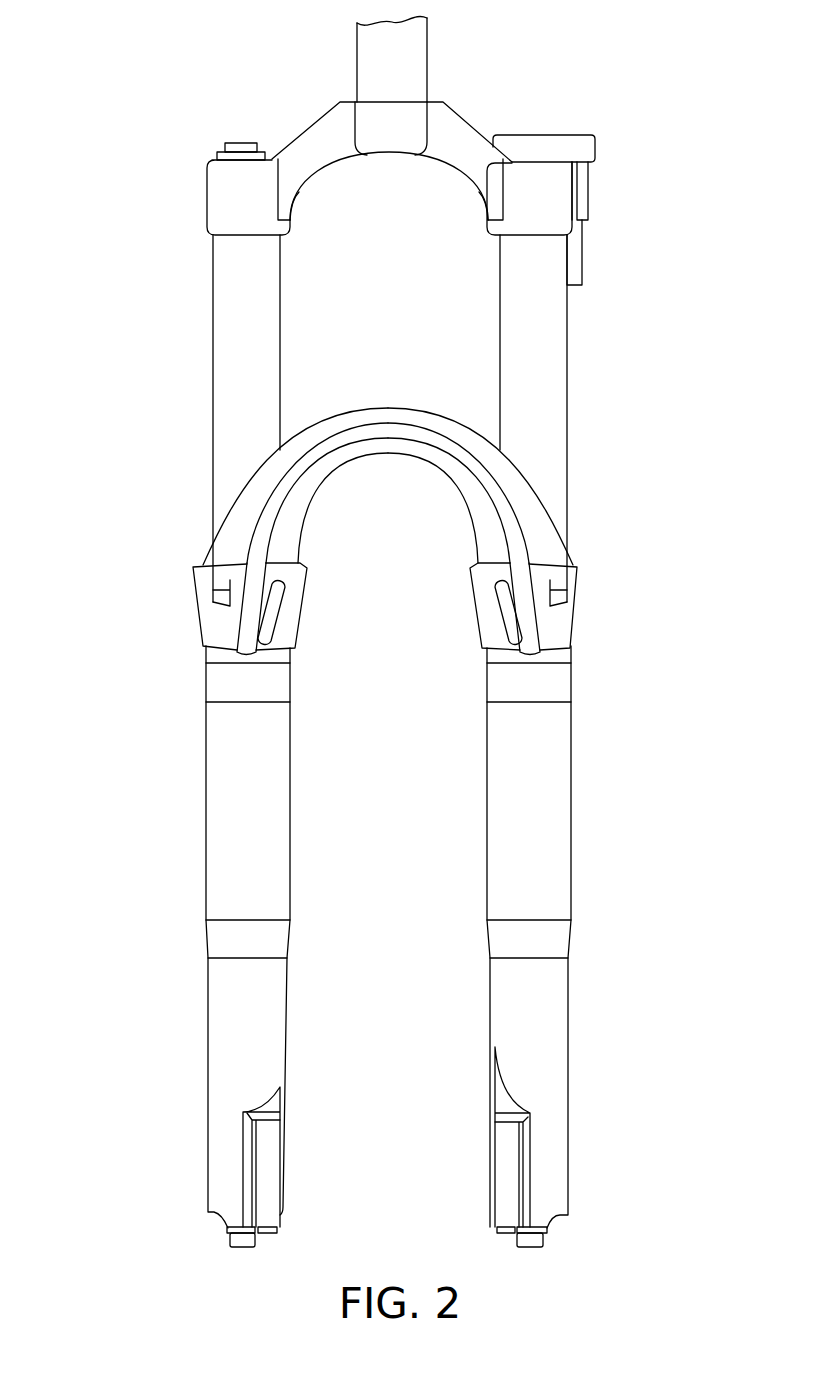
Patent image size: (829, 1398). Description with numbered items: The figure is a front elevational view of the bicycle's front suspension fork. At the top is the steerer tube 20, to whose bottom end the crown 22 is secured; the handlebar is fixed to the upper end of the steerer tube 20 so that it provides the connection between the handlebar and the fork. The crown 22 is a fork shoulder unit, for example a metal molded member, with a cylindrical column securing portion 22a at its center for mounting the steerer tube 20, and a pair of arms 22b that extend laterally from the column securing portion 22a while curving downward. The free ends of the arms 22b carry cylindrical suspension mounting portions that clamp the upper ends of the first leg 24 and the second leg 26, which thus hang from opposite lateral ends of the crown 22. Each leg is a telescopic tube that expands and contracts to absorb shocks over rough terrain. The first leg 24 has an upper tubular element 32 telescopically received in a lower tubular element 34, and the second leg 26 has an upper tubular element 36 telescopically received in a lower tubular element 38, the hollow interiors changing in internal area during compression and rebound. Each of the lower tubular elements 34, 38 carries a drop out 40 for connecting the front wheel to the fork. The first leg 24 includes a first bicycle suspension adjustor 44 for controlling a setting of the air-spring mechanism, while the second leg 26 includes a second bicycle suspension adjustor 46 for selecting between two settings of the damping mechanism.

The steerer tube 20 is at (428, 58).
The crown 22 is at (388, 144).
The column securing portion 22a is at (380, 102).
The arms 22b is at (207, 195).
The first leg 24 is at (546, 544).
The second leg 26 is at (231, 544).
The upper tubular element 32 is at (567, 466).
The lower tubular element 34 is at (559, 621).
The upper tubular element 36 is at (213, 466).
The lower tubular element 38 is at (219, 621).
The drop out 40 is at (267, 1153).
The first bicycle suspension adjustor 44 is at (545, 116).
The second bicycle suspension adjustor 46 is at (237, 128).